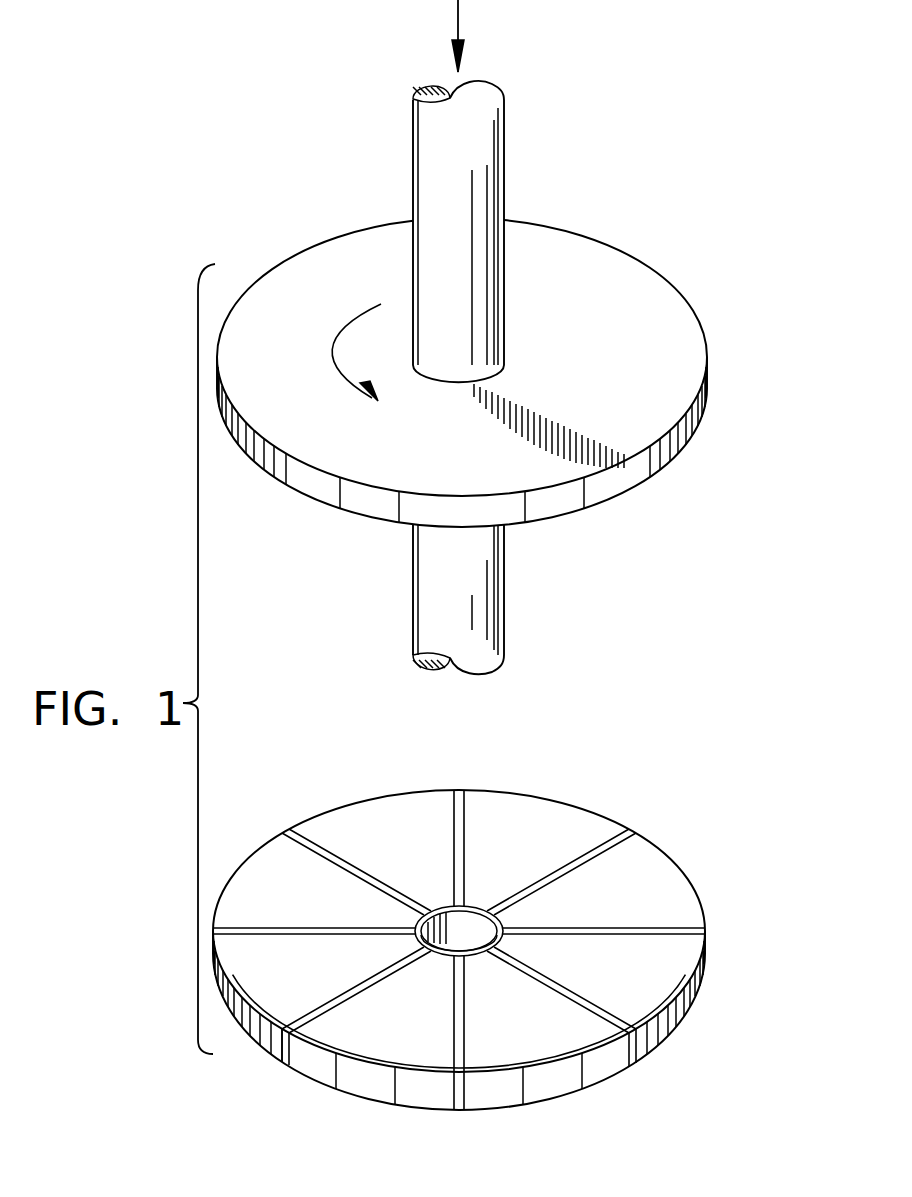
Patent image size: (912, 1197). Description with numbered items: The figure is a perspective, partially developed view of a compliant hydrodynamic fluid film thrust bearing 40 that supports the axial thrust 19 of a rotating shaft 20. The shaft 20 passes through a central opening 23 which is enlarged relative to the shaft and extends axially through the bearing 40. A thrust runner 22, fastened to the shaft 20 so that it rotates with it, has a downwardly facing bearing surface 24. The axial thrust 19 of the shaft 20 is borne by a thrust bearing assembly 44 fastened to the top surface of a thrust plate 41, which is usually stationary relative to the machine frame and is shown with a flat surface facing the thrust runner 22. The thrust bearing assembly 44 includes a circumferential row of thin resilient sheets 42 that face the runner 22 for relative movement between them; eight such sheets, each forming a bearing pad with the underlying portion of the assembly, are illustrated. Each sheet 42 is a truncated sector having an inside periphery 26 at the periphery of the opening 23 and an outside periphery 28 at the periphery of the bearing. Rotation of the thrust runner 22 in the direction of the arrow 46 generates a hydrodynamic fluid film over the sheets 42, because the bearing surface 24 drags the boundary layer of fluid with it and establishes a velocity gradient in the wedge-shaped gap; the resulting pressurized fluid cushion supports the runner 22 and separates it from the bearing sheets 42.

The axial thrust 19 is at (462, 14).
The rotating shaft 20 is at (430, 148).
The thrust runner 22 is at (660, 271).
The bearing surface 24 is at (332, 499).
The arrow 46 is at (340, 330).
The compliant hydrodynamic fluid film thrust bearing 40 is at (502, 942).
The thrust plate 41 is at (262, 1045).
The thin resilient sheets 42 is at (390, 800).
The outside periphery 28 is at (252, 848).
The central opening 23 is at (470, 915).
The inside periphery 26 is at (502, 928).
The thrust bearing assembly 44 is at (470, 1075).